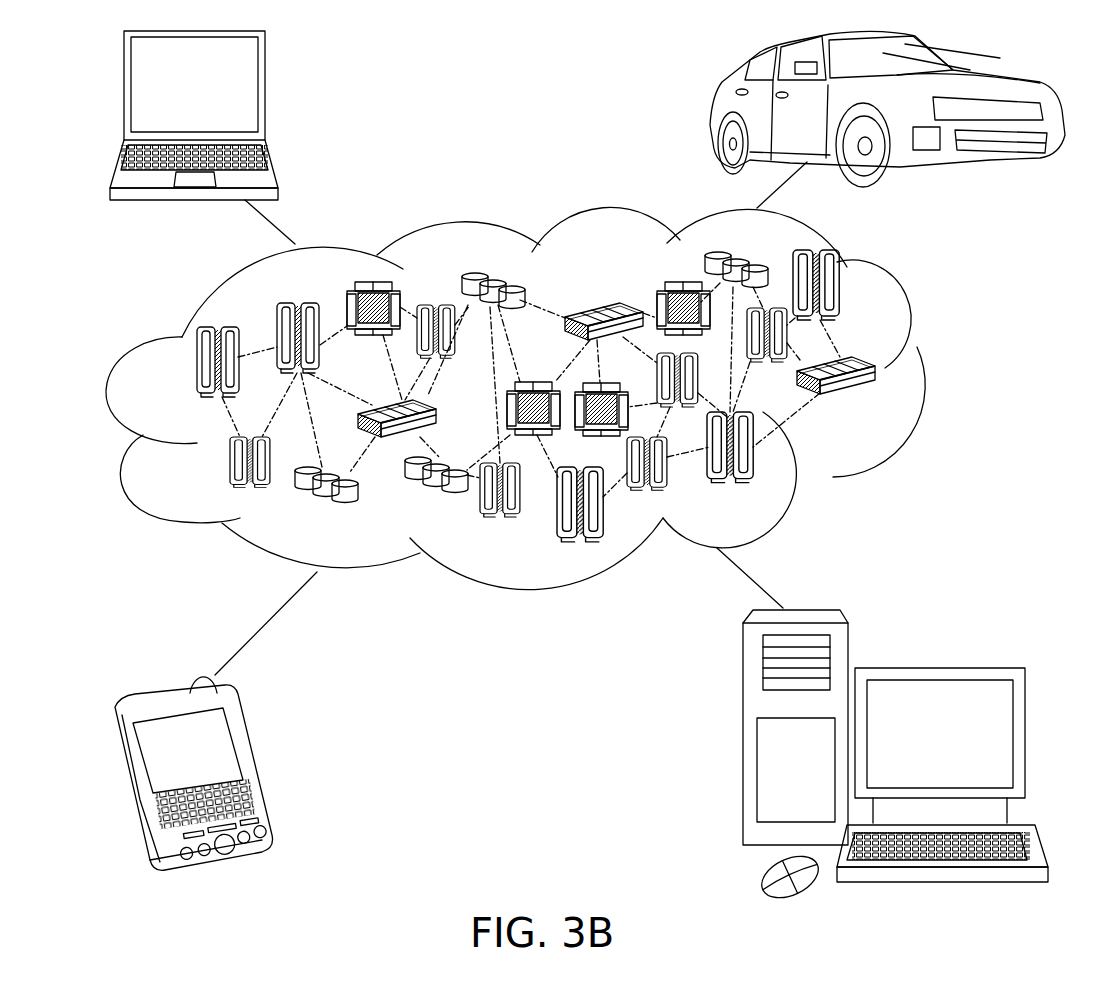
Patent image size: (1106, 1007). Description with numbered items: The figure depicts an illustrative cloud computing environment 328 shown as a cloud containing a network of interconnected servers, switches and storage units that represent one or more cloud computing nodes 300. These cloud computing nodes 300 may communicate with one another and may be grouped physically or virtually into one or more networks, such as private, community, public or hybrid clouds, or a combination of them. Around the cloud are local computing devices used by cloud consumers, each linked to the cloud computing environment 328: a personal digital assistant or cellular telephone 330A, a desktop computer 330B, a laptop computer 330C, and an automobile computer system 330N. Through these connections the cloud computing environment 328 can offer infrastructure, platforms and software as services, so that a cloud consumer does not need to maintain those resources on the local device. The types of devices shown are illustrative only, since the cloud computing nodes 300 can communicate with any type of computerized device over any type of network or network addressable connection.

The cloud computing nodes 300 is at (878, 403).
The cloud computing environment 328 is at (937, 374).
The personal digital assistant (PDA) or cellular telephone 330A is at (253, 764).
The desktop computer 330B is at (935, 667).
The laptop computer 330C is at (265, 95).
The automobile computer system 330N is at (712, 111).